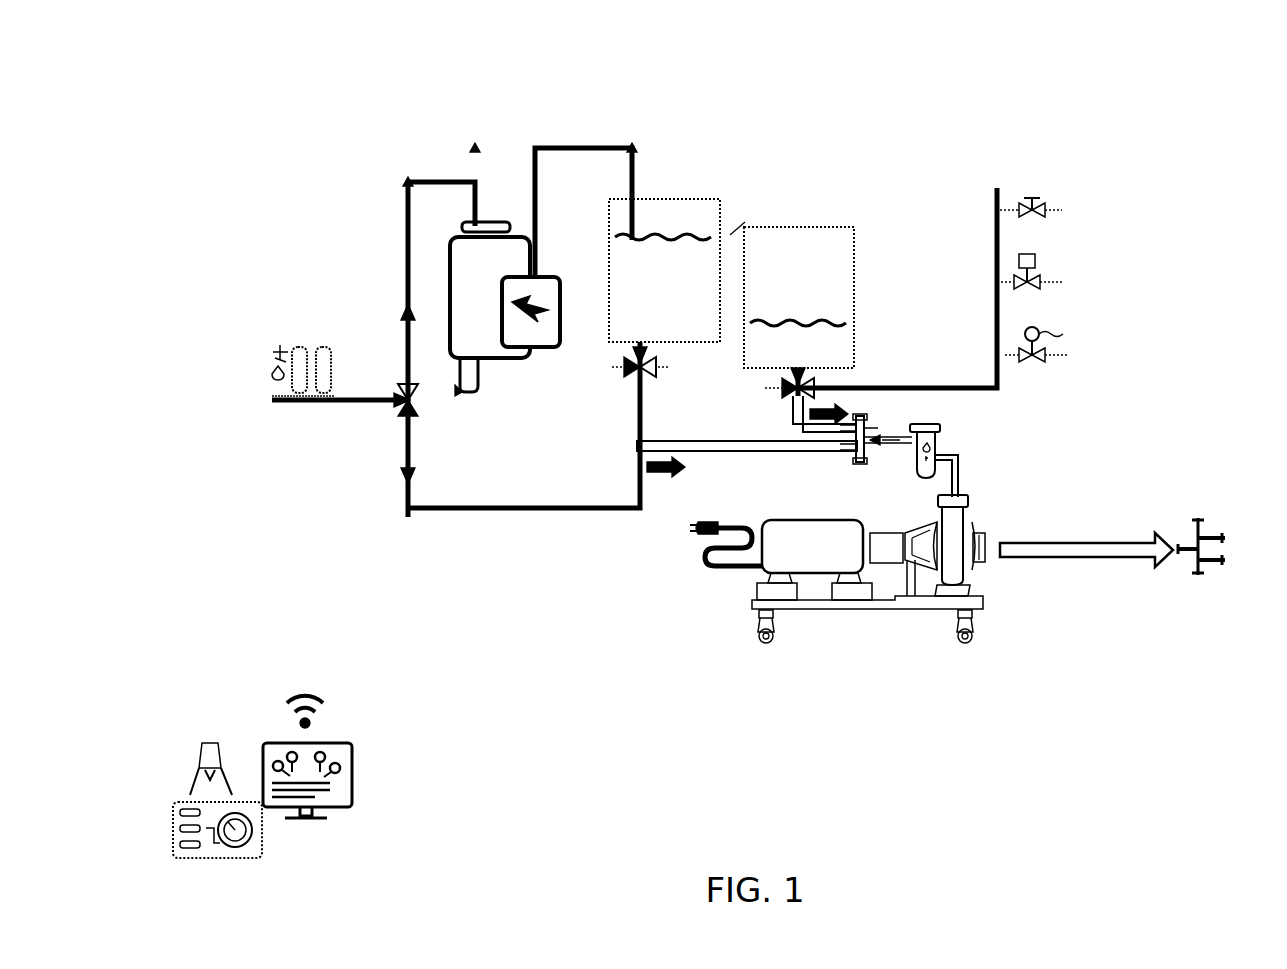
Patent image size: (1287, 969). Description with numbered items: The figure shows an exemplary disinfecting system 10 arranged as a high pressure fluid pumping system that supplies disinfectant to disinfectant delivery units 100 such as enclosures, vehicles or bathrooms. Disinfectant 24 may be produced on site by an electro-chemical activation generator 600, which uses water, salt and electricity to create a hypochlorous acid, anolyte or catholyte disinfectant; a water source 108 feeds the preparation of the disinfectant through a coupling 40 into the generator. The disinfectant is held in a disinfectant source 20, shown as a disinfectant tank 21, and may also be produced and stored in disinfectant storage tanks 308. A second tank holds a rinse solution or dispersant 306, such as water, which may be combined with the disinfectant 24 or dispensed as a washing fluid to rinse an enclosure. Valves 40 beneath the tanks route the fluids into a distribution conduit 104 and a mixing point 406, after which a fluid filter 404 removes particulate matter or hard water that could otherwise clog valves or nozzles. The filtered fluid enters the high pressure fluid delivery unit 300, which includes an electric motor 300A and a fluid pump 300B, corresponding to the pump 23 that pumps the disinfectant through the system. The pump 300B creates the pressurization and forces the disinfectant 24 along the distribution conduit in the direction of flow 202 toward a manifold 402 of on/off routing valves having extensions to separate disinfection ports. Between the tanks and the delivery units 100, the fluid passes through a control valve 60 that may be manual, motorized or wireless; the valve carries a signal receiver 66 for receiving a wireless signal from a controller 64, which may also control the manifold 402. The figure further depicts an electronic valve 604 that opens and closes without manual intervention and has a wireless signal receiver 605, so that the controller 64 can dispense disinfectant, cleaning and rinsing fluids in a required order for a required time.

The disinfecting system 10 is at (400, 130).
The electro-chemical activation (ECA) generator 600 is at (505, 222).
The disinfectant source 20 is at (678, 218).
The disinfectant 24 is at (698, 253).
The disinfectant storage tank 308 is at (695, 255).
The disinfectant tank 21 is at (833, 242).
The dispersant 306 is at (847, 365).
The coupling 40 is at (400, 412).
The water source 108 is at (290, 372).
The conduit 104 is at (680, 443).
The mixing valve 406 is at (862, 455).
The fluid filter 404 is at (940, 424).
The high pressure fluid delivery unit 300 is at (766, 566).
The pump 23 is at (783, 550).
The electric motor 300A is at (835, 550).
The fluid pump 300B is at (985, 555).
The direction of flow 202 is at (1118, 546).
The manifold 402 is at (998, 240).
The signal receiver 66 is at (1025, 200).
The control valve 60 is at (1035, 197).
The disinfectant delivery unit 100 is at (1160, 252).
The electronic valve 604 is at (243, 745).
The controller 64 is at (340, 759).
The wireless signal receiver 605 is at (258, 820).